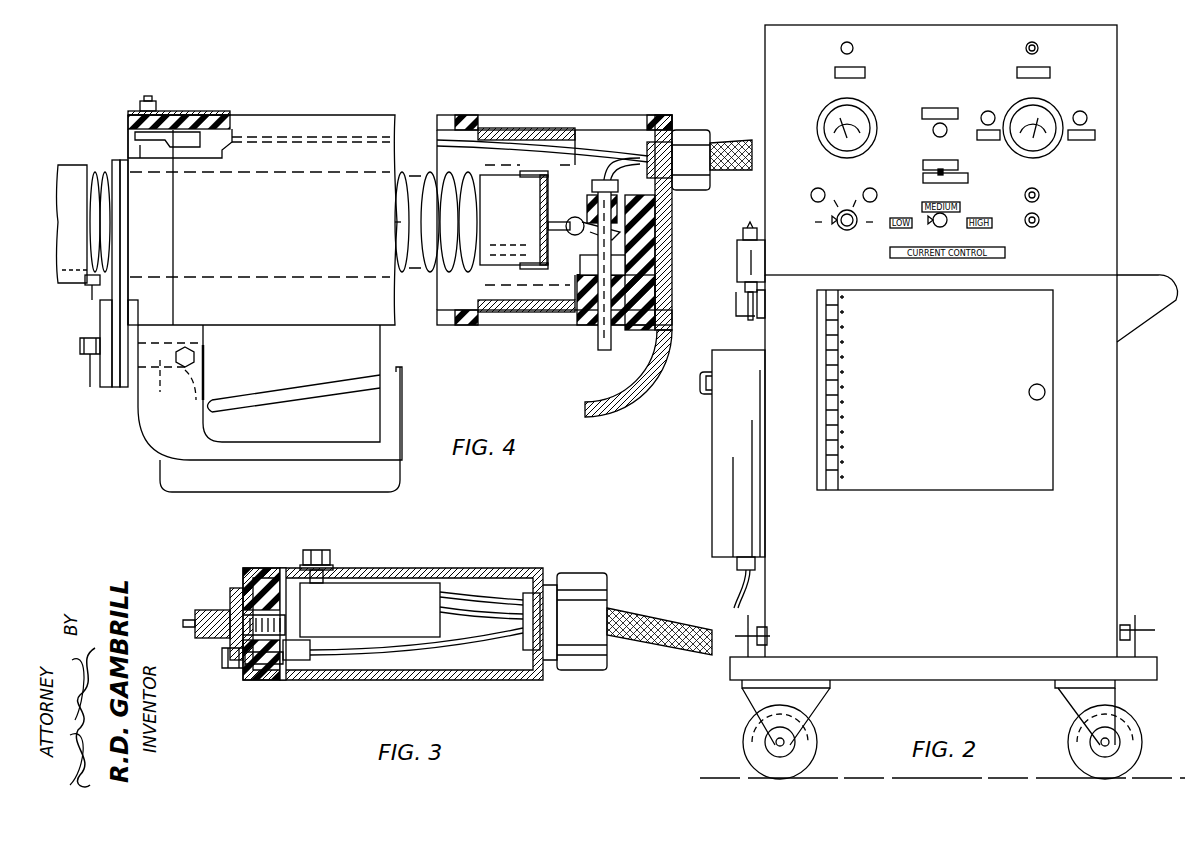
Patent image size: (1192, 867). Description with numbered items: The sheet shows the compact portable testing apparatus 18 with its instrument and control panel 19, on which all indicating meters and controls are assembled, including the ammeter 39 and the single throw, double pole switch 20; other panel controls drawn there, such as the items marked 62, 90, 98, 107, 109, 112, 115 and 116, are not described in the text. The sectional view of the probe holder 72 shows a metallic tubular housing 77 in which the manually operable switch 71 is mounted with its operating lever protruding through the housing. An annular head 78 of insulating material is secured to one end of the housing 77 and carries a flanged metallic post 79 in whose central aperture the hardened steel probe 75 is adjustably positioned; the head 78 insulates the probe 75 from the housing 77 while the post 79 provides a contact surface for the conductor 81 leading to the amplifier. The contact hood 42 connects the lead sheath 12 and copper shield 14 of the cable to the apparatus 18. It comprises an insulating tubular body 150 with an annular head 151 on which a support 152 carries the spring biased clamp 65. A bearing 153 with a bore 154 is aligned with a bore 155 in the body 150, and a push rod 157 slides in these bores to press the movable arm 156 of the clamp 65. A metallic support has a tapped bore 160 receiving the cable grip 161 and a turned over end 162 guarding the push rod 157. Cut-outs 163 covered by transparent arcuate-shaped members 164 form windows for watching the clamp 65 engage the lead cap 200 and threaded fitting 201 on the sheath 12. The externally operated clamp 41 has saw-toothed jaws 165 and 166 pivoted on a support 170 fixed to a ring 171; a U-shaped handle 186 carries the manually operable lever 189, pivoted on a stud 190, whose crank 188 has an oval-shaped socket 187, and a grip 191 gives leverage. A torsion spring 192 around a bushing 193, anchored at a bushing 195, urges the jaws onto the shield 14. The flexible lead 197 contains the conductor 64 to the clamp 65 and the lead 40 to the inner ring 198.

In FIG. 4, the lead sheath 12 is at (525, 243).
In FIG. 4, the copper shield 14 is at (430, 270).
In FIG. 2, the portable testing apparatus 18 is at (740, 68).
In FIG. 2, the instrument and control panel 19 is at (1105, 201).
In FIG. 2, the single throw, double pole switch 20 is at (945, 172).
In FIG. 2, the ammeter 39 is at (830, 129).
In FIG. 4, the lead 40 is at (210, 128).
In FIG. 4, the externally operated clamp 41 is at (105, 160).
In FIG. 4, the contact hood 42 is at (250, 102).
In FIG. 2, the contact hood 42 is at (700, 480).
In FIG. 2, the current control knob 62 is at (847, 230).
In FIG. 4, the conductor 64 is at (615, 160).
In FIG. 4, the spring biased clamp 65 is at (574, 220).
In FIG. 3, the manually operable switch 71 is at (395, 585).
In FIG. 4, the probe holder 72 is at (732, 265).
In FIG. 3, the probe holder 72 is at (515, 690).
In FIG. 2, the probe holder 72 is at (732, 264).
In FIG. 3, the hardened steel probe 75 is at (187, 618).
In FIG. 3, the metallic tubular housing 77 is at (367, 675).
In FIG. 3, the annular head 78 is at (240, 668).
In FIG. 2, the annular head 78 is at (853, 46).
In FIG. 3, the metallic post 79 is at (235, 600).
In FIG. 3, the conductor 81 is at (488, 640).
In FIG. 2, the sync meter 90 is at (1038, 145).
In FIG. 2, the reset button 98 is at (933, 130).
In FIG. 2, the low knob 107 is at (986, 111).
In FIG. 2, the high knob 109 is at (1082, 111).
In FIG. 2, the indicator 112 is at (814, 190).
In FIG. 2, the sync button 115 is at (1038, 47).
In FIG. 2, the indicator 116 is at (872, 188).
In FIG. 4, the tubular body 150 is at (312, 130).
In FIG. 4, the annular head 151 is at (655, 286).
In FIG. 4, the support 152 is at (598, 200).
In FIG. 4, the bearing 153 is at (582, 325).
In FIG. 4, the bore 154 is at (655, 305).
In FIG. 4, the bore 155 is at (612, 330).
In FIG. 4, the movable arm 156 is at (600, 348).
In FIG. 4, the push rod 157 is at (672, 228).
In FIG. 4, the tapped bore 160 is at (672, 145).
In FIG. 4, the cable grip 161 is at (692, 179).
In FIG. 4, the turned over end 162 is at (612, 412).
In FIG. 4, the cut-outs 163 is at (485, 115).
In FIG. 4, the arcuate-shaped members 164 is at (545, 128).
In FIG. 4, the jaw 165 is at (112, 162).
In FIG. 4, the jaw 166 is at (122, 160).
In FIG. 4, the support 170 is at (133, 316).
In FIG. 4, the ring 171 is at (165, 195).
In FIG. 4, the U-shaped handle 186 is at (152, 415).
In FIG. 4, the oval-shaped socket 187 is at (250, 467).
In FIG. 4, the crank 188 is at (160, 399).
In FIG. 4, the manually operable lever 189 is at (293, 397).
In FIG. 4, the stud 190 is at (205, 352).
In FIG. 4, the grip 191 is at (310, 482).
In FIG. 4, the torsion spring 192 is at (100, 312).
In FIG. 4, the bushing 193 is at (90, 367).
In FIG. 4, the bushing 195 is at (88, 283).
In FIG. 4, the flexible lead 197 is at (735, 143).
In FIG. 4, the ring 198 is at (166, 111).
In FIG. 4, the lead cap 200 is at (540, 203).
In FIG. 4, the threaded fitting 201 is at (548, 225).